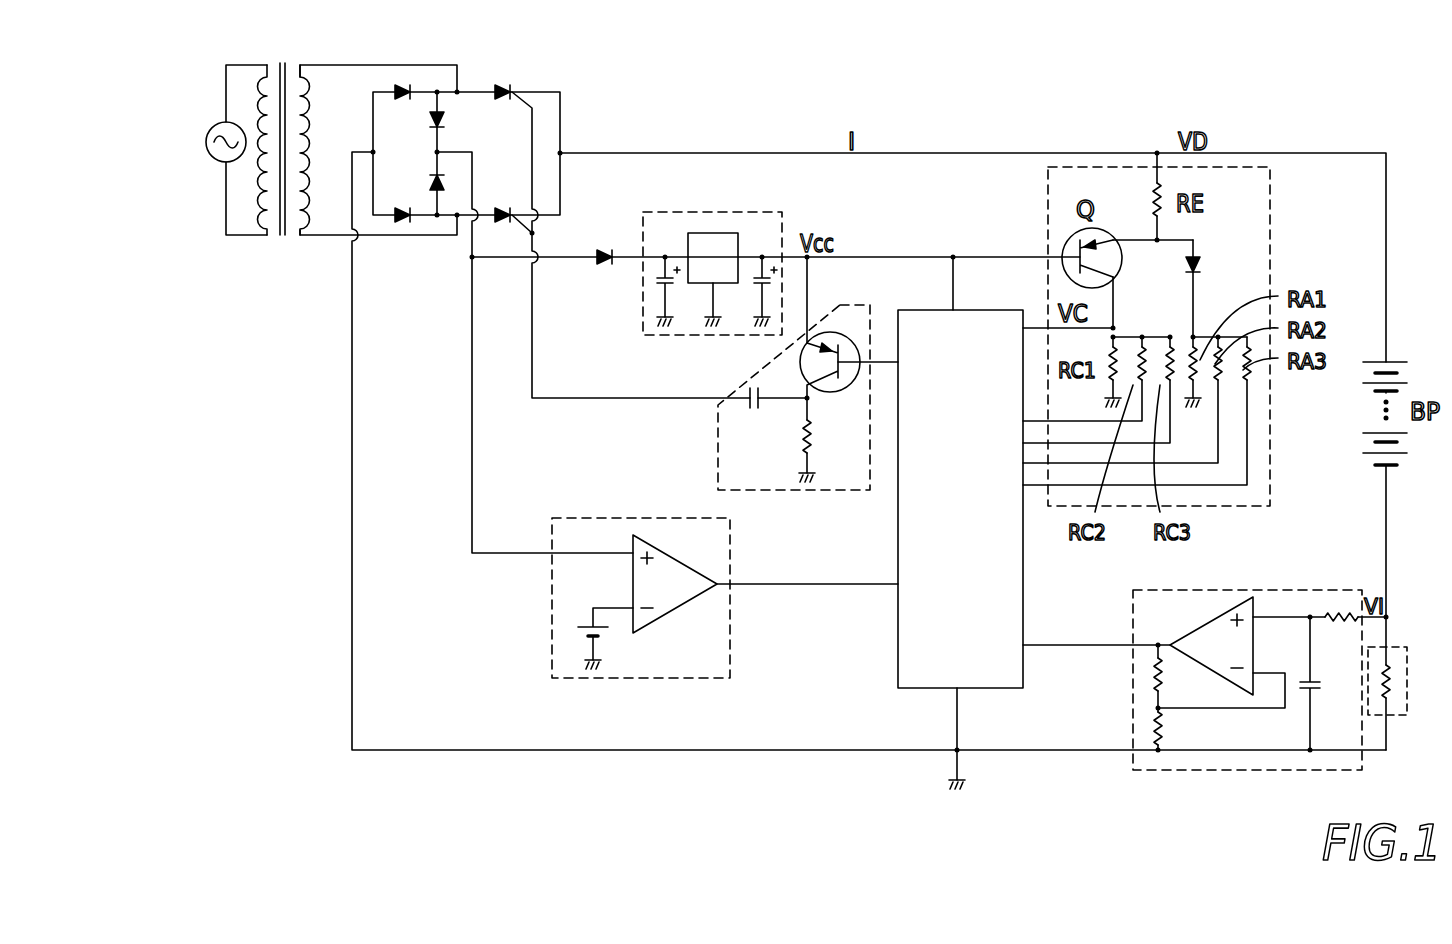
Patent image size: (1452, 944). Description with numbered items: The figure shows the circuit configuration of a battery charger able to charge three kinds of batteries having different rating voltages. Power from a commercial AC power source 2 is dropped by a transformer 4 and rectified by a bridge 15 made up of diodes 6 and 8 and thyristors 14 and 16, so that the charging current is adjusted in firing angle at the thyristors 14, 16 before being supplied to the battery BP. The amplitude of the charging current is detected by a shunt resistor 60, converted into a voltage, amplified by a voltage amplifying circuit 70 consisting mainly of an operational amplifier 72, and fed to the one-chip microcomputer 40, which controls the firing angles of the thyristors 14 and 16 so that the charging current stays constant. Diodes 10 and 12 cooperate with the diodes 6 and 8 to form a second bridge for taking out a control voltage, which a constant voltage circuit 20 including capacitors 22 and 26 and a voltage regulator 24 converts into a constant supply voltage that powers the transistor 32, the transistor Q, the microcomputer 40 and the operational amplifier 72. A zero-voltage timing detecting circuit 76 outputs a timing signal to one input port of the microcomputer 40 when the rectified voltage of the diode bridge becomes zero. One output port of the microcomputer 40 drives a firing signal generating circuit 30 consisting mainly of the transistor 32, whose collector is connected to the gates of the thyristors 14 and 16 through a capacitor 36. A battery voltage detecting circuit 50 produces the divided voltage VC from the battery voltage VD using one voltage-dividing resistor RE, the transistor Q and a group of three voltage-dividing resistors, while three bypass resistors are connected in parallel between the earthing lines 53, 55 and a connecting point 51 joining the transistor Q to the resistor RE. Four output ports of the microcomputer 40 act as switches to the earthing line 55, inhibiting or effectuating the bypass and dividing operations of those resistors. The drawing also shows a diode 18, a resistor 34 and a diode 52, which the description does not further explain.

The commercial AC power source 2 is at (207, 160).
The transformer 4 is at (282, 40).
The diode 6 is at (409, 100).
The diode 8 is at (406, 207).
The diode 10 is at (447, 123).
The diode 12 is at (445, 185).
The thyristor 14 is at (507, 84).
The bridge 15 is at (559, 84).
The thyristor 16 is at (500, 225).
The diode 18 is at (599, 267).
The constant voltage circuit 20 is at (681, 211).
The capacitor 22 is at (659, 287).
The voltage regulator 24 is at (706, 284).
The capacitor 26 is at (756, 287).
The firing signal generating circuit 30 is at (853, 303).
The transistor 32 is at (833, 392).
The resistor 34 is at (812, 440).
The capacitor 36 is at (754, 410).
The one-chip microcomputer 40 is at (994, 605).
The battery voltage detecting circuit 50 is at (1277, 217).
The connecting point 51 is at (1157, 240).
The diode 52 is at (1205, 262).
The earthing line 53 is at (1200, 394).
The earthing line 55 is at (968, 778).
The shunt resistor 60 is at (1407, 703).
The voltage amplifying circuit 70 is at (1295, 590).
The operational amplifier 72 is at (1225, 664).
The zero-voltage timing detecting circuit 76 is at (731, 608).